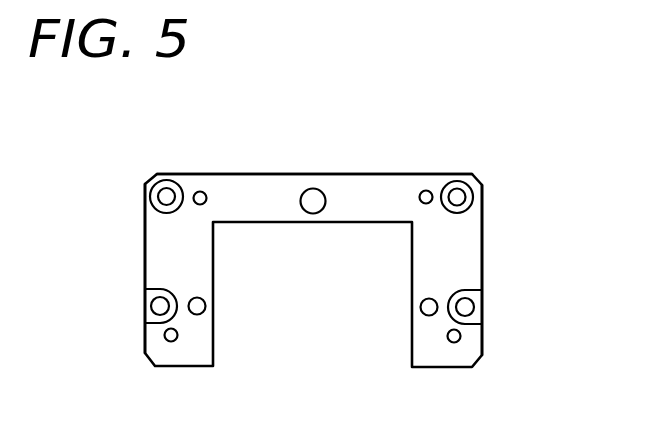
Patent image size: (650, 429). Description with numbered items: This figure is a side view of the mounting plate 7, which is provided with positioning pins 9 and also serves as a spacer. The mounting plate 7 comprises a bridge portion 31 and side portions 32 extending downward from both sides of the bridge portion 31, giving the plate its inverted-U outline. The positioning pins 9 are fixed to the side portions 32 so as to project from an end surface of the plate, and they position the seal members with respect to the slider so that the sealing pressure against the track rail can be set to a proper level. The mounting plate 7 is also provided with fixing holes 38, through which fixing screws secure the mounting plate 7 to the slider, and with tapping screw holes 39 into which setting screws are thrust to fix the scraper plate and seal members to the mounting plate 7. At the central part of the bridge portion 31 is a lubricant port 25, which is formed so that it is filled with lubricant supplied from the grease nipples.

The mounting plate 7 is at (357, 173).
The positioning pins 9 is at (205, 306).
The lubricant port 25 is at (313, 189).
The bridge portion 31 is at (257, 190).
The side portions 32 is at (158, 252).
The fixing holes 38 is at (166, 195).
The tapping screw holes 39 is at (200, 191).